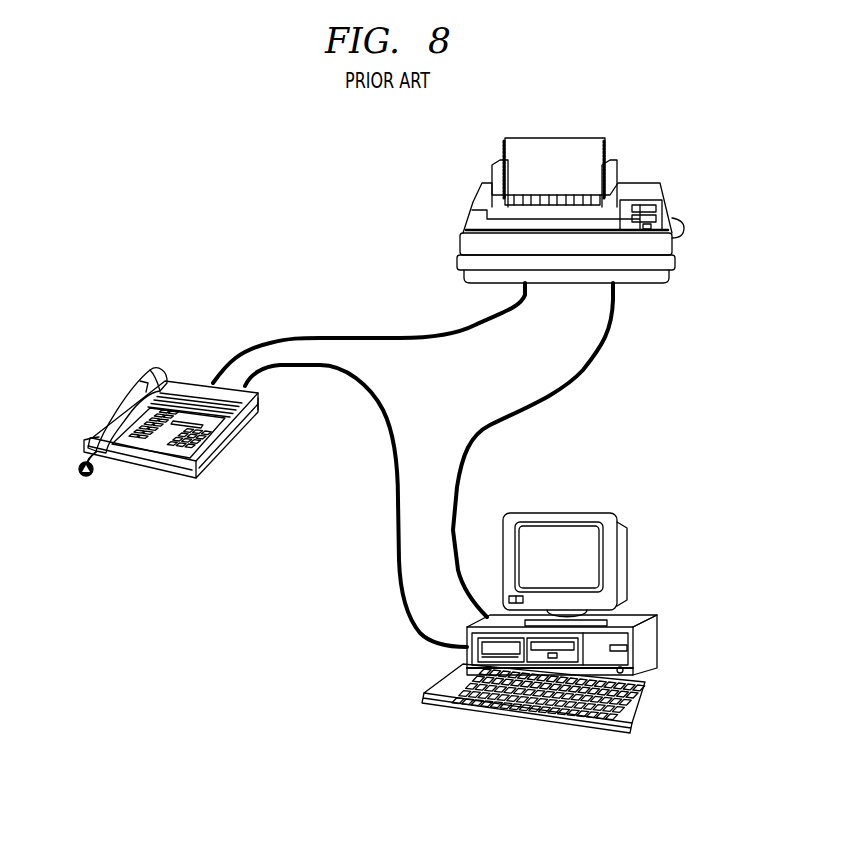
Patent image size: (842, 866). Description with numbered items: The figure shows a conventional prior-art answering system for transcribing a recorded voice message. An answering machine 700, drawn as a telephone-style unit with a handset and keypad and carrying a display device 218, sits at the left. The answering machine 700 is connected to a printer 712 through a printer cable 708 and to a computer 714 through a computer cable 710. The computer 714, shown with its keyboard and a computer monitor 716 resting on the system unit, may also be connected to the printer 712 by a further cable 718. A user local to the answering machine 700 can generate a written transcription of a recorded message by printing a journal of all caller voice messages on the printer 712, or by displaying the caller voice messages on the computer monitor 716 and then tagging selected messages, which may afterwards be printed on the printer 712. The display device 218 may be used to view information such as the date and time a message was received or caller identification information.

The answering machine 700 is at (115, 393).
The display device 218 is at (260, 403).
The printer cable 708 is at (357, 337).
The computer cable 710 is at (387, 413).
The printer 712 is at (658, 185).
The computer 714 is at (652, 643).
The computer monitor 716 is at (618, 572).
The cable 718 is at (582, 372).